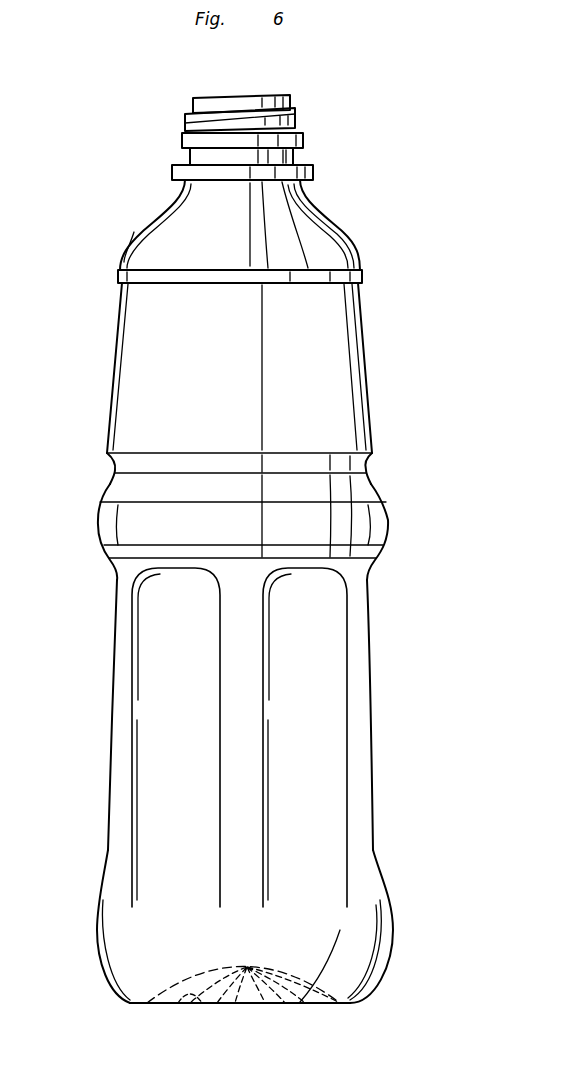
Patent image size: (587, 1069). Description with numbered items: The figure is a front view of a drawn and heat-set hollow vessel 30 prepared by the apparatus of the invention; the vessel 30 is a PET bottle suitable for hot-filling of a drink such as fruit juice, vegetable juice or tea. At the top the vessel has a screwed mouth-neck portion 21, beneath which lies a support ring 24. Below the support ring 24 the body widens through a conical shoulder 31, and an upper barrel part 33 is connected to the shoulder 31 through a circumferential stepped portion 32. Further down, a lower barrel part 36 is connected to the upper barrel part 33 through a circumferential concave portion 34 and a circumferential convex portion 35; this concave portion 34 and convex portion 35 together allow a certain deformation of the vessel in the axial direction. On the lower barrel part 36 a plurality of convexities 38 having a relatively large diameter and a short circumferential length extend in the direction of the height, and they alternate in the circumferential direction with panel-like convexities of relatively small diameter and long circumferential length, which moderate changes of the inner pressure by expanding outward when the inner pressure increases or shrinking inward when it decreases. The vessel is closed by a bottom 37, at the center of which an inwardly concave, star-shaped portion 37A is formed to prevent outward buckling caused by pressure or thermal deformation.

The screwed mouth-neck portion 21 is at (297, 125).
The support ring 24 is at (180, 162).
The vessel 30 is at (358, 226).
The conical shoulder 31 is at (145, 223).
The circumferential stepped portion 32 is at (362, 278).
The upper barrel part 33 is at (110, 387).
The circumferential concave portion 34 is at (368, 482).
The circumferential convex portion 35 is at (388, 525).
The lower barrel part 36 is at (380, 867).
The bottom 37 is at (343, 1005).
The inwardly concave, star-shaped portion 37A is at (203, 1005).
The convexities 38 is at (243, 765).